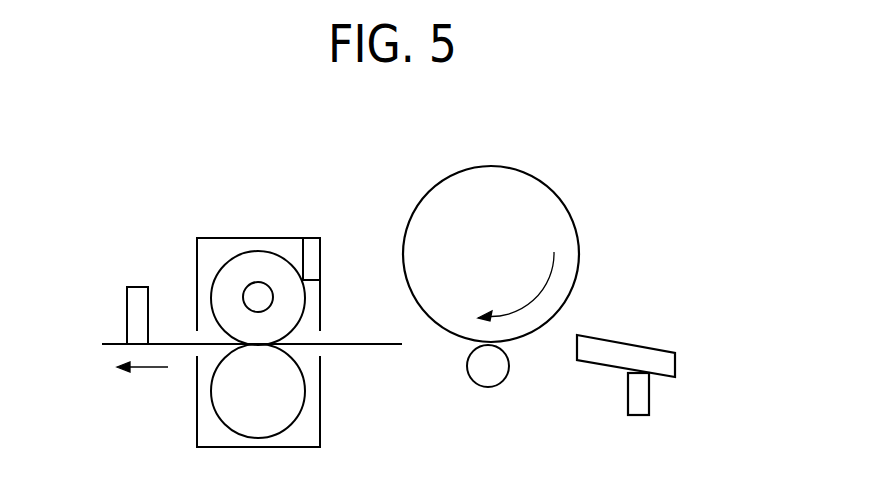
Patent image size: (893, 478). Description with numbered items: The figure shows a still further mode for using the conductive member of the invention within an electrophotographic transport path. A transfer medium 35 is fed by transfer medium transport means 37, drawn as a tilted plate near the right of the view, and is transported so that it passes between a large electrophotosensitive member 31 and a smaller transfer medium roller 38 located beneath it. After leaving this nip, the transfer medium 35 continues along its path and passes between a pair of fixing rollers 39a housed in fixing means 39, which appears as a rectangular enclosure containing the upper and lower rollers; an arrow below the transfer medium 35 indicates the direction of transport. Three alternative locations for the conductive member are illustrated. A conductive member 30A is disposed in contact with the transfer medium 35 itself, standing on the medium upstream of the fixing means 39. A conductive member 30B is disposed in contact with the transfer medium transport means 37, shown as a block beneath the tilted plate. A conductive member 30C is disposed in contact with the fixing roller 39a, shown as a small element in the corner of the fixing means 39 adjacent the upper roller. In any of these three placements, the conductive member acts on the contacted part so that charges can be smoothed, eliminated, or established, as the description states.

The electrophotosensitive member 31 is at (565, 200).
The transfer medium 35 is at (367, 345).
The transfer medium transport means 37 is at (623, 340).
The transfer medium roller 38 is at (500, 368).
The fixing means 39 is at (228, 232).
The fixing roller 39a is at (232, 268).
The conductive member 30A is at (137, 288).
The conductive member 30B is at (640, 397).
The conductive member 30C is at (312, 250).